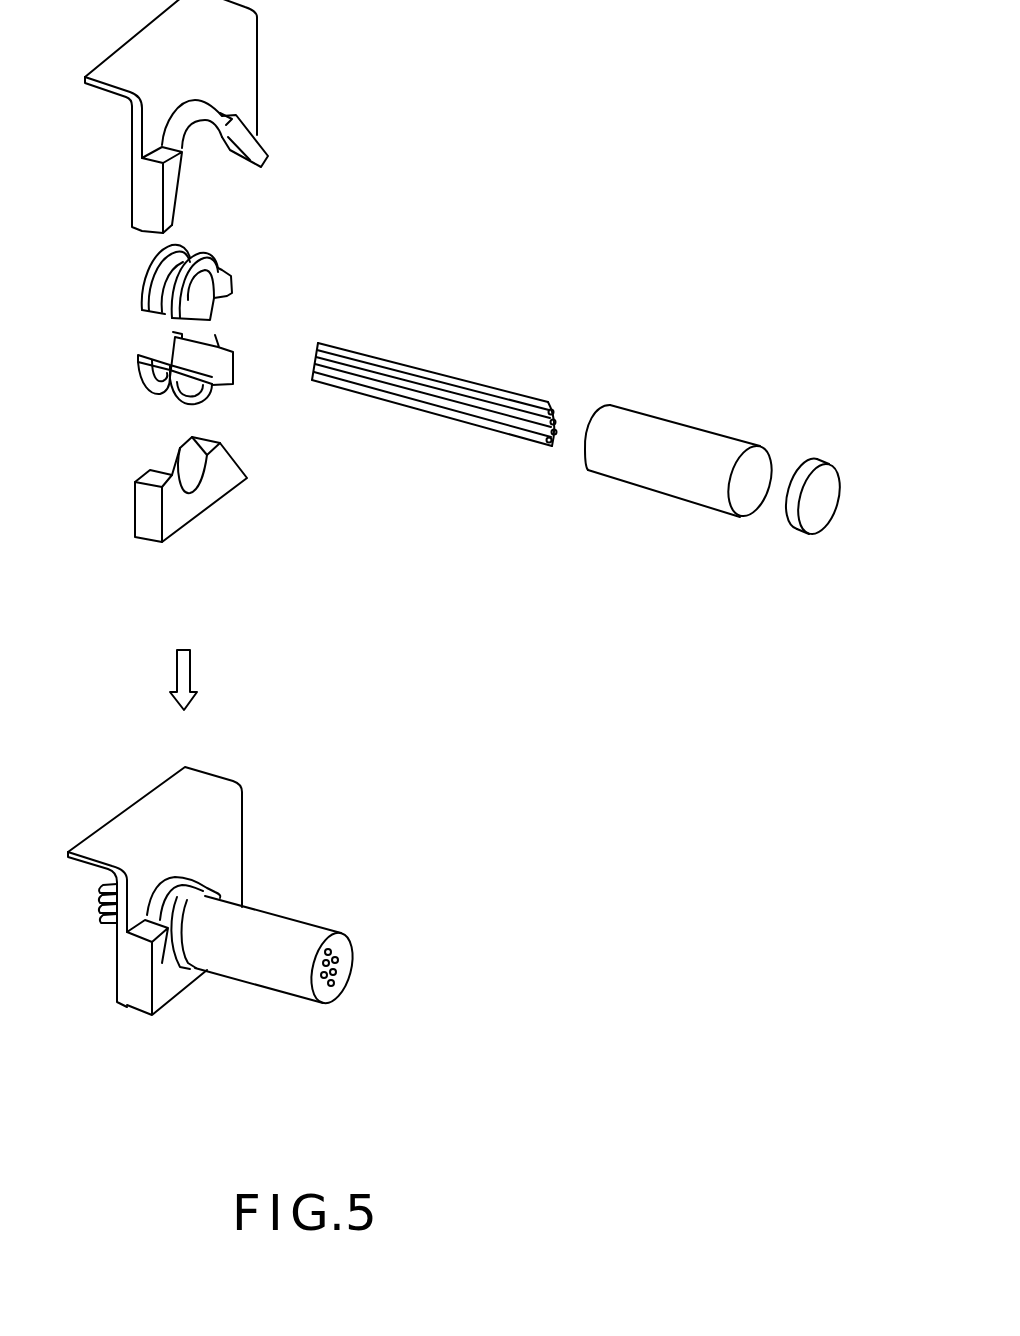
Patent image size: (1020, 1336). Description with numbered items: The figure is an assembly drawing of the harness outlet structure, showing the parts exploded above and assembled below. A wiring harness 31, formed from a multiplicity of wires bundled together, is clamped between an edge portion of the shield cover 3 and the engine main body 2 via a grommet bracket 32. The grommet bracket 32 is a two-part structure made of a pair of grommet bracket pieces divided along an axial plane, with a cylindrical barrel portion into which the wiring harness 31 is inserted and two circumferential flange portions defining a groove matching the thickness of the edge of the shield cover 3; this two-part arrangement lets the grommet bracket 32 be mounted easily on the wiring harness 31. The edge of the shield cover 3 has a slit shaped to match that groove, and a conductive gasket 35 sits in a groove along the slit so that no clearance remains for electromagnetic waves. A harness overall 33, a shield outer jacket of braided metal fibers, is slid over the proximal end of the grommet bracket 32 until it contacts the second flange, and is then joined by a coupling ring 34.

The shield cover 3 is at (240, 63).
The conductive gasket 35 is at (192, 153).
The grommet bracket 32 is at (243, 283).
The wiring harness 31 is at (435, 370).
The harness overall 33 is at (660, 470).
The coupling ring 34 is at (792, 540).
The engine main body 2 is at (177, 517).